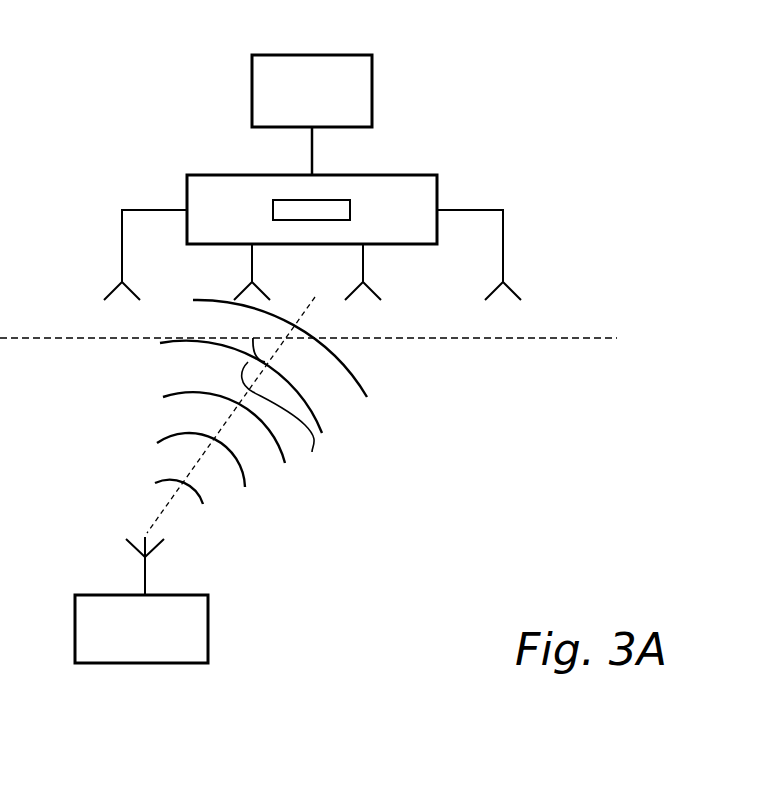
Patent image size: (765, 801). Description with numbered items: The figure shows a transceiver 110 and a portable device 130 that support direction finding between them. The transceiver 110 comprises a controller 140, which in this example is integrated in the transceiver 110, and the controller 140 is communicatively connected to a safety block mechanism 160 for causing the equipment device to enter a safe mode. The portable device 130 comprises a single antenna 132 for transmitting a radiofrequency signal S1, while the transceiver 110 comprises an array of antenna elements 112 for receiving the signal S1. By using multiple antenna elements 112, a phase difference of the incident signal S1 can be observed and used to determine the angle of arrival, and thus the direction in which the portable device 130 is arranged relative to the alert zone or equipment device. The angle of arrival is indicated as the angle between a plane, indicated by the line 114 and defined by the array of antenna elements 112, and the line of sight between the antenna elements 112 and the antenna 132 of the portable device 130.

The transceiver 110 is at (420, 175).
The array of antenna elements 112 is at (503, 230).
The line indicating plane of antenna array 114 is at (507, 340).
The portable device 130 is at (209, 625).
The antenna 132 is at (127, 545).
The controller 140 is at (301, 210).
The safety block mechanism 160 is at (372, 82).
The signal S1 is at (378, 437).